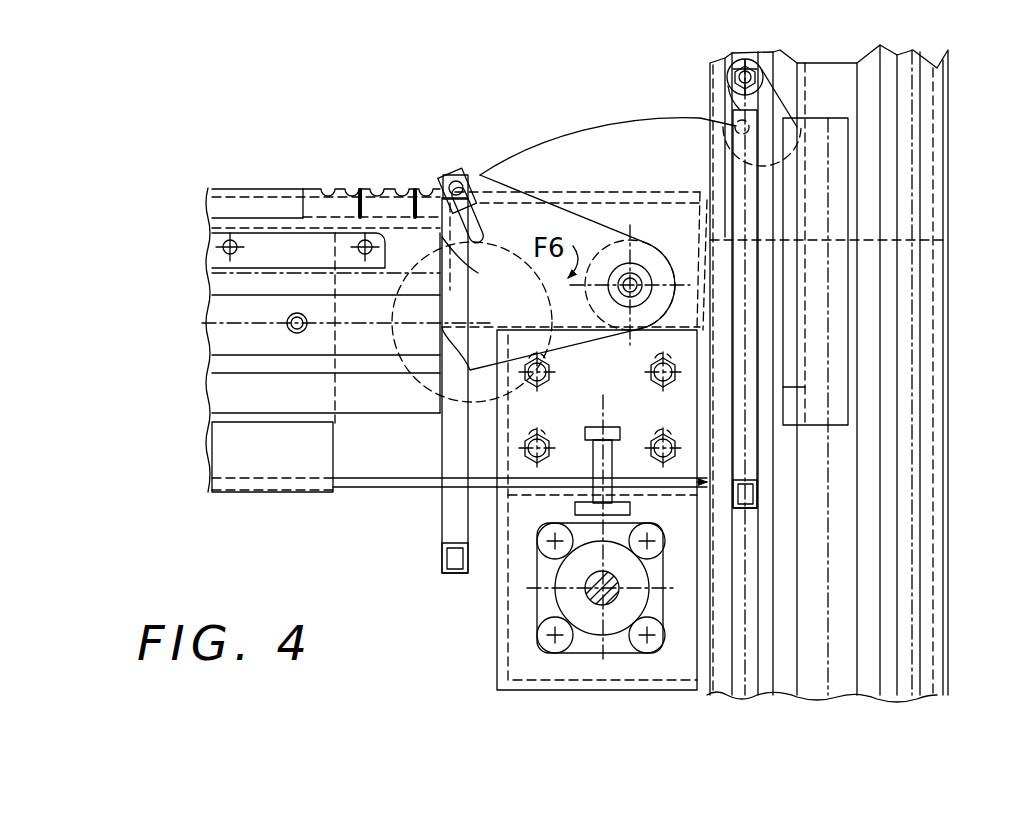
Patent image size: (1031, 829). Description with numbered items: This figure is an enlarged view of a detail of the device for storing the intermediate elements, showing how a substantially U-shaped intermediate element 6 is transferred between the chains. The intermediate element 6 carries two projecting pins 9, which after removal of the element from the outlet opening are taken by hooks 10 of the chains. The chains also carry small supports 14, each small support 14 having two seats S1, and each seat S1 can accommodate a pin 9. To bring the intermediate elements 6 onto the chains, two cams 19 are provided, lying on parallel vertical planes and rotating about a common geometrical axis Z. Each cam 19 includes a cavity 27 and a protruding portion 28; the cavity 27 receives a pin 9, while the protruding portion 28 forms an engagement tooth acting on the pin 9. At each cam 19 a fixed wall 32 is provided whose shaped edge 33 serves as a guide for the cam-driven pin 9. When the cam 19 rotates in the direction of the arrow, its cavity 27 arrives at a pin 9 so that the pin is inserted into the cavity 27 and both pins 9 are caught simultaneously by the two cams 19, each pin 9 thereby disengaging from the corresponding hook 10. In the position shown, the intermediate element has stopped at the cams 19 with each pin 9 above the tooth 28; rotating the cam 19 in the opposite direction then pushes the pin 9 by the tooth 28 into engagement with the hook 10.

The intermediate element 6 is at (438, 526).
The pin 9 is at (456, 182).
The hook 10 is at (738, 60).
The small support 14 is at (330, 207).
The seat S1 is at (318, 193).
The cam 19 is at (532, 207).
The cavity 27 is at (476, 238).
The protruding portion 28 is at (483, 227).
The fixed wall 32 is at (647, 133).
The shaped edge 33 is at (600, 130).
The geometrical axis Z is at (624, 278).